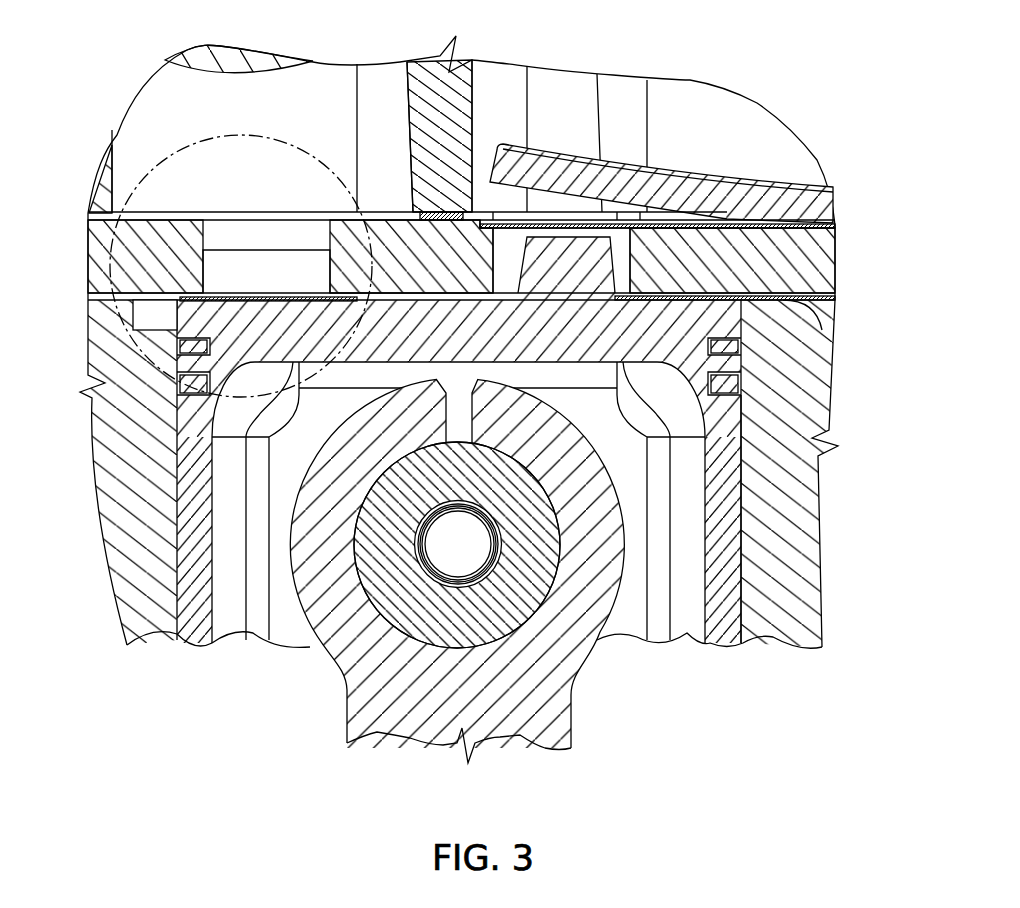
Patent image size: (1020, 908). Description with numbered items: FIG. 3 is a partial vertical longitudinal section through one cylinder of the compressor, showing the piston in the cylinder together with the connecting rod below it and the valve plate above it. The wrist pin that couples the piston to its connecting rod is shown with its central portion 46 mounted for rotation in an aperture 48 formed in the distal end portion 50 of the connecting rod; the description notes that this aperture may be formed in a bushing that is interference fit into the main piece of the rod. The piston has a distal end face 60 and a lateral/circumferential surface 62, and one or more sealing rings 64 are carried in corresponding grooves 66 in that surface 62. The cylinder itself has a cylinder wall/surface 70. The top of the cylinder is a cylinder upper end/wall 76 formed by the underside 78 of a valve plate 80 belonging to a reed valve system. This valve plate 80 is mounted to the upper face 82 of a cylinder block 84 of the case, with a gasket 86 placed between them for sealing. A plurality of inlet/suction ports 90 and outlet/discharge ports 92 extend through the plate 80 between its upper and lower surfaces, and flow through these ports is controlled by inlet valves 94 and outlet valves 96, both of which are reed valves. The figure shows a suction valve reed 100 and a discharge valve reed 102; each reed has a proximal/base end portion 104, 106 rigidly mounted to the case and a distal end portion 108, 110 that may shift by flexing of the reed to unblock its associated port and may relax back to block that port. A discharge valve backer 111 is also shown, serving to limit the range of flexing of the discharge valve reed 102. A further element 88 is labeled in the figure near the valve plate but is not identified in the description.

The central portion 46 is at (405, 590).
The aperture 48 is at (581, 612).
The distal end portion 50 is at (586, 602).
The distal end face 60 is at (442, 288).
The lateral/circumferential surface 62 is at (743, 484).
The sealing rings 64 is at (740, 345).
The grooves 66 is at (780, 400).
The cylinder wall/surface 70 is at (728, 596).
The cylinder upper end/wall 76 is at (743, 450).
The underside 78 is at (740, 380).
The valve plate 80 is at (778, 252).
The upper face 82 is at (88, 290).
The cylinder block 84 is at (786, 573).
The gasket 86 is at (103, 290).
The seal 88 is at (420, 213).
The inlet/suction ports 90 is at (283, 240).
The outlet/discharge ports 92 is at (623, 254).
The inlet valves 94 is at (315, 195).
The outlet valves 96 is at (624, 146).
The suction valve reed 100 is at (260, 289).
The discharge valve reed 102 is at (567, 216).
The proximal/base end portion 104 is at (805, 306).
The proximal/base end portion 106 is at (822, 224).
The distal end portion 108 is at (236, 292).
The distal end portion 110 is at (553, 227).
The discharge valve backer 111 is at (737, 200).